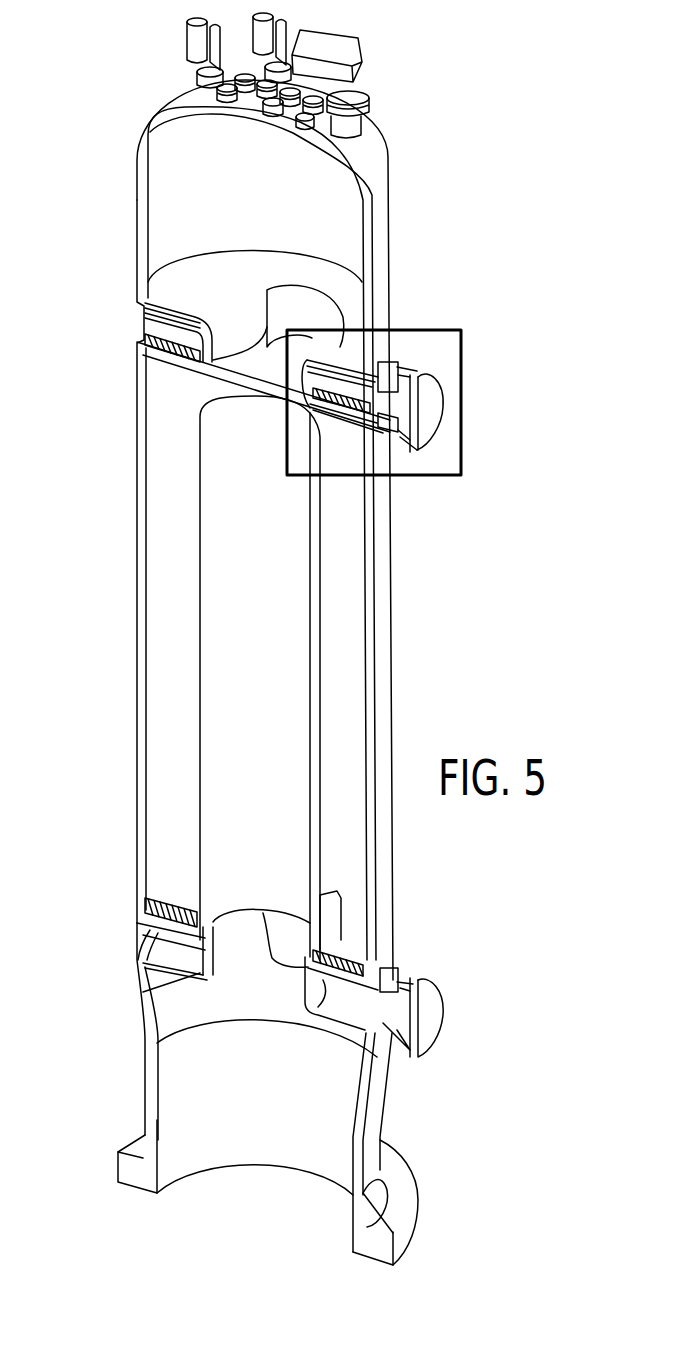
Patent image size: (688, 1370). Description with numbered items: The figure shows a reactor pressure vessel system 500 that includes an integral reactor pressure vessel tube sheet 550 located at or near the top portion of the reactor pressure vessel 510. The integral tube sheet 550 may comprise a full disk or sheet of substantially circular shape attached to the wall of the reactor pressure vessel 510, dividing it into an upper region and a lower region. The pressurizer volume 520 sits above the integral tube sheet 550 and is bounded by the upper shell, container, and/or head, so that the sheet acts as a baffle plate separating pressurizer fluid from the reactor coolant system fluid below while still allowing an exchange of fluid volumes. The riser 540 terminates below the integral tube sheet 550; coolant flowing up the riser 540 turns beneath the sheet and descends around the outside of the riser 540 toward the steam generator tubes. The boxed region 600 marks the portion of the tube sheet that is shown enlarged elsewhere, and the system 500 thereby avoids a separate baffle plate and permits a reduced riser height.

The reactor pressure vessel system 500 is at (144, 65).
The reactor pressure vessel 510 is at (390, 250).
The pressurizer volume 520 is at (330, 215).
The riser 540 is at (227, 743).
The integral reactor pressure vessel tube sheet 550 is at (256, 370).
The nozzle assembly 600 is at (462, 402).